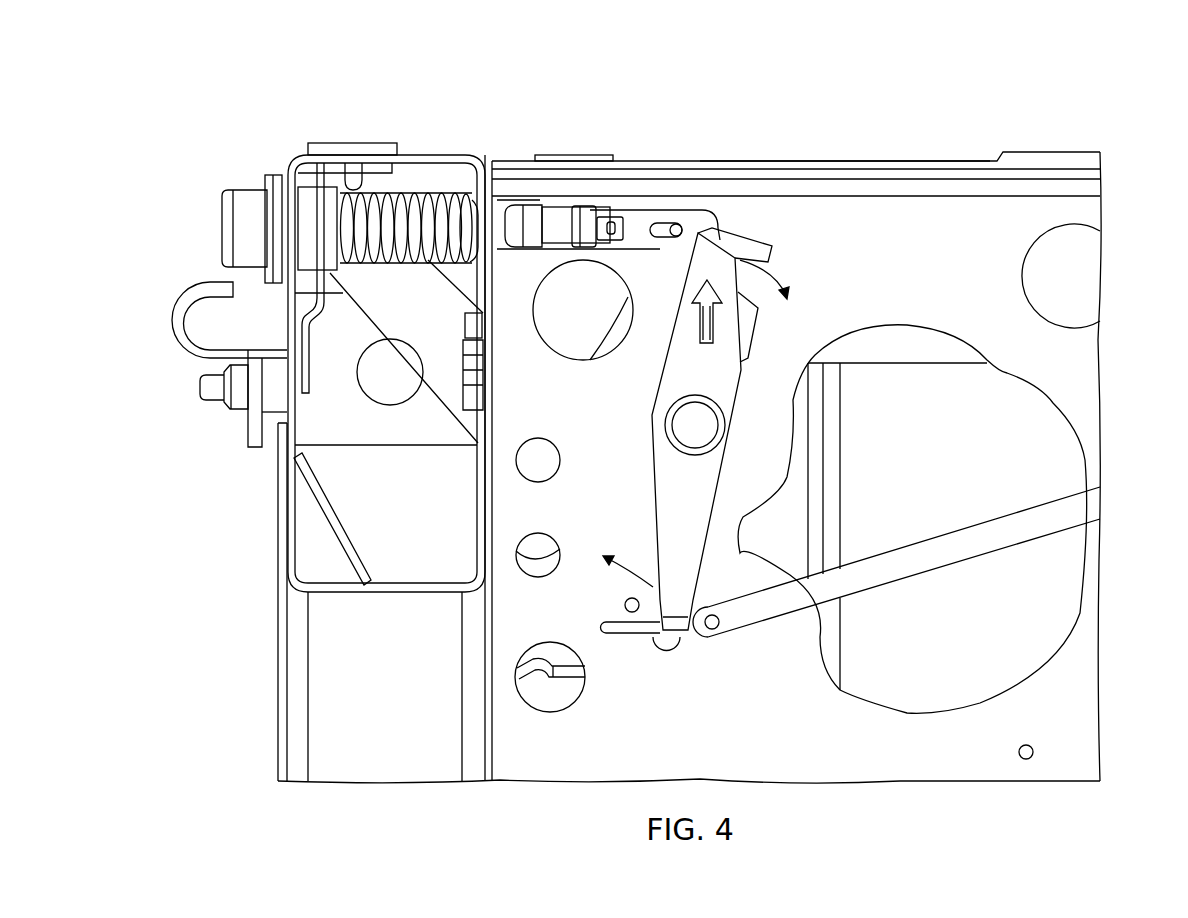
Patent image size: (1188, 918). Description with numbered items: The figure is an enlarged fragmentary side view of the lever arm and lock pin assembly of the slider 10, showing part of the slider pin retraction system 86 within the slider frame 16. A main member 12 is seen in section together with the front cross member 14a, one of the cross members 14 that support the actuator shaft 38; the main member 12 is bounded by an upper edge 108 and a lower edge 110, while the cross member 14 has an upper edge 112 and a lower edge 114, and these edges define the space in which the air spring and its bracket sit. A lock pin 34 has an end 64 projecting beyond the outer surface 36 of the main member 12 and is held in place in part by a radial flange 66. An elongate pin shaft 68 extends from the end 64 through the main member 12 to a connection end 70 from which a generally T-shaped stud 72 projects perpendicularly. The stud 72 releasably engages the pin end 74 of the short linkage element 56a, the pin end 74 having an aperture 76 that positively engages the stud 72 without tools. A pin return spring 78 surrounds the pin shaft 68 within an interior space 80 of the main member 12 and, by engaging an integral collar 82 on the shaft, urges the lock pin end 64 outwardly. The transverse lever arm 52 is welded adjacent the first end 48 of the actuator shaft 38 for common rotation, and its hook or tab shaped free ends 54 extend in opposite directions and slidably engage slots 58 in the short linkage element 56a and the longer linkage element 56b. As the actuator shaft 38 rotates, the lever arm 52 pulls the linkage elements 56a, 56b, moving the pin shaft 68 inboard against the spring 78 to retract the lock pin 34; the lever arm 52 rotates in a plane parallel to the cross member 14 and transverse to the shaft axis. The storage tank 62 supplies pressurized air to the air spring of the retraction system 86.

The slider 10 is at (670, 437).
The main member 12 is at (445, 155).
The cross member 14 is at (723, 458).
The front cross member 14a is at (1075, 206).
The slider frame 16 is at (495, 172).
The lock pin 34 is at (230, 185).
The outer surface 36 is at (288, 338).
The actuator shaft 38 is at (712, 463).
The first end 48 is at (685, 425).
The lever arm 52 is at (672, 372).
The free end 54 is at (720, 240).
The short linkage element 56a is at (640, 218).
The long linkage element 56b is at (950, 553).
The slot 58 is at (672, 225).
The storage tank 62 is at (912, 519).
The lock pin end 64 is at (232, 190).
The radial flange 66 is at (283, 178).
The pin shaft 68 is at (400, 196).
The connection end 70 is at (563, 210).
The stud 72 is at (582, 248).
The pin end 74 is at (605, 247).
The aperture 76 is at (617, 222).
The pin return spring 78 is at (400, 265).
The interior space 80 is at (332, 430).
The collar 82 is at (305, 225).
The slider pin retraction system 86 is at (863, 150).
The upper edge 108 is at (333, 160).
The lower edge 110 is at (337, 595).
The upper edge 112 is at (950, 160).
The lower edge 114 is at (868, 783).